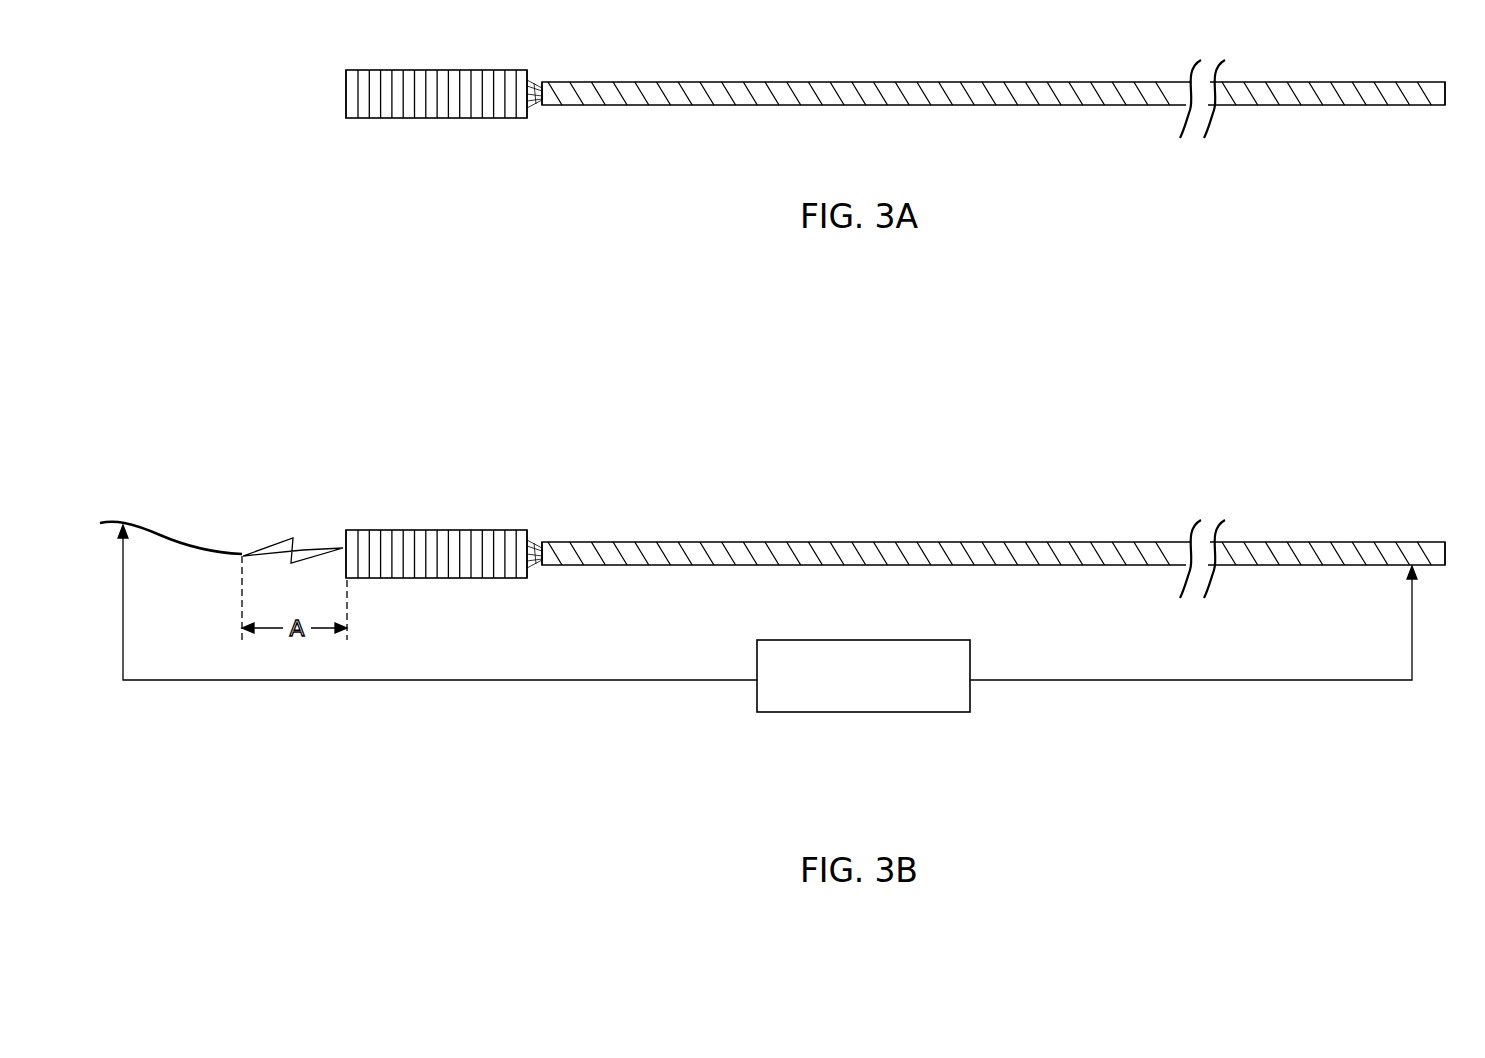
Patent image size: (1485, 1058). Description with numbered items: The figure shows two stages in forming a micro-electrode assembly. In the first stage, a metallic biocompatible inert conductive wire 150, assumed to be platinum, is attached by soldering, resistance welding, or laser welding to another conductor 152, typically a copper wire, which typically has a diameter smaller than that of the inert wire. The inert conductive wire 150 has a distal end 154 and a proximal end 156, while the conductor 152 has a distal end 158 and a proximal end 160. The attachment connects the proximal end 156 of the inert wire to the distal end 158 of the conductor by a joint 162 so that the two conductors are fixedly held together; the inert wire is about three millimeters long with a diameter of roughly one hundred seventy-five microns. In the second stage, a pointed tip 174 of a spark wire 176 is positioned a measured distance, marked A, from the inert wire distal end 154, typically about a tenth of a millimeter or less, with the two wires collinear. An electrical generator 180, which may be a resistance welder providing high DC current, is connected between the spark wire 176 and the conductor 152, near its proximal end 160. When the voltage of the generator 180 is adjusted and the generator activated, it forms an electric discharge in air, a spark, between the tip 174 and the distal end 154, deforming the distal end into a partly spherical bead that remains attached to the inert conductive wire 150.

In FIG. 3A, the inert conductive wire 150 is at (398, 68).
In FIG. 3B, the inert conductive wire 150 is at (398, 528).
In FIG. 3A, the conductor 152 is at (607, 81).
In FIG. 3B, the conductor 152 is at (607, 541).
In FIG. 3A, the distal end of inert wire 154 is at (345, 88).
In FIG. 3B, the distal end of inert wire 154 is at (346, 535).
In FIG. 3A, the proximal end of inert wire 156 is at (517, 68).
In FIG. 3B, the proximal end of inert wire 156 is at (517, 528).
In FIG. 3A, the distal end of conductor 158 is at (553, 107).
In FIG. 3B, the distal end of conductor 158 is at (553, 567).
In FIG. 3A, the proximal end of conductor 160 is at (1428, 106).
In FIG. 3B, the proximal end of conductor 160 is at (1428, 566).
In FIG. 3A, the joint 162 is at (533, 110).
In FIG. 3B, the joint 162 is at (540, 545).
In FIG. 3B, the pointed tip 174 is at (243, 553).
In FIG. 3B, the spark wire 176 is at (165, 532).
In FIG. 3B, the electrical generator 180 is at (865, 712).